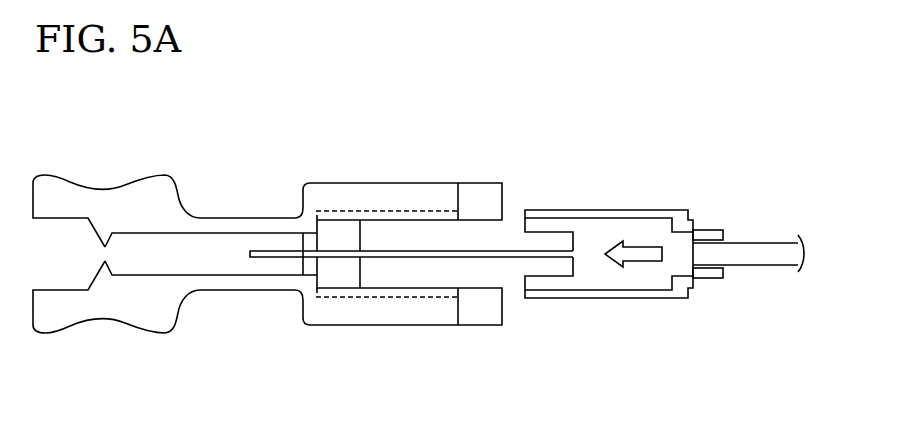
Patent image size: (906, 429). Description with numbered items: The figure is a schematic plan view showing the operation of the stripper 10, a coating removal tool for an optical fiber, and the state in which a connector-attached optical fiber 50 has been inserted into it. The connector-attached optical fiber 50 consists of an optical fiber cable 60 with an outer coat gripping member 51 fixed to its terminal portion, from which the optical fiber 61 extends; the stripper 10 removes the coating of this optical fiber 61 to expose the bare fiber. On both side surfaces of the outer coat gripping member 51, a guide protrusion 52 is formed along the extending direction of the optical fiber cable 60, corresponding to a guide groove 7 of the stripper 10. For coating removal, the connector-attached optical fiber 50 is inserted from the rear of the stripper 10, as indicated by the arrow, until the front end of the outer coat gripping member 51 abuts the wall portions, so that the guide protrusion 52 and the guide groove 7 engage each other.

The stripper 10 is at (267, 223).
The guide groove 7 is at (383, 210).
The optical fiber 61 is at (510, 258).
The connector-attached optical fiber 50 is at (616, 234).
The guide protrusion 52 is at (605, 214).
The outer coat gripping member 51 is at (630, 232).
The optical fiber cable 60 is at (752, 255).